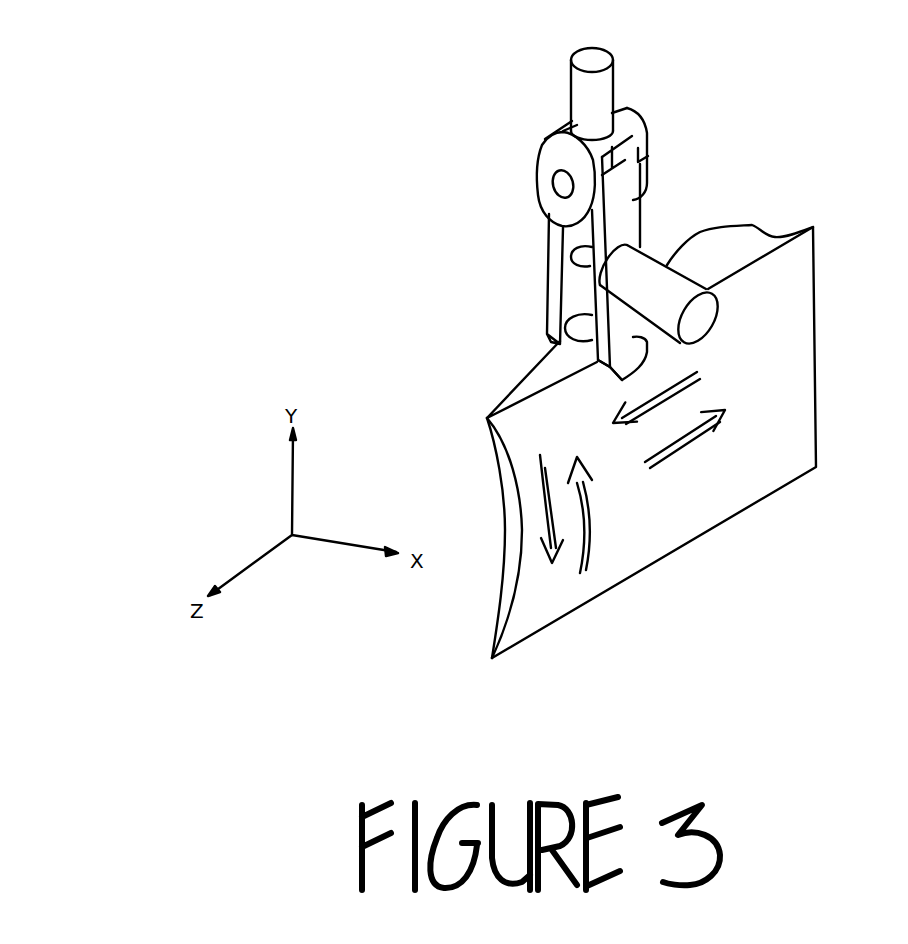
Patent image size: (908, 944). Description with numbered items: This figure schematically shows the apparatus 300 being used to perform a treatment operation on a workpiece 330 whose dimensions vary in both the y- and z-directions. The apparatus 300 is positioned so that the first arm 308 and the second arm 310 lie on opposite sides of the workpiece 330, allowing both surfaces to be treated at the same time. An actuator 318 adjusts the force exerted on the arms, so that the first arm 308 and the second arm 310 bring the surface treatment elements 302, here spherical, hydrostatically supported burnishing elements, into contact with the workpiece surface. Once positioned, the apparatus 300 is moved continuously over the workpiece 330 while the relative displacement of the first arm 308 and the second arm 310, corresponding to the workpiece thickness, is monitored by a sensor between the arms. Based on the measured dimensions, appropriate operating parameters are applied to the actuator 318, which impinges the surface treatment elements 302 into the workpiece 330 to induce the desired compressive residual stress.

The apparatus 300 is at (673, 107).
The surface treatment elements 302 is at (580, 328).
The first arm 308 is at (597, 362).
The second arm 310 is at (553, 268).
The actuator 318 is at (662, 298).
The workpiece 330 is at (668, 518).